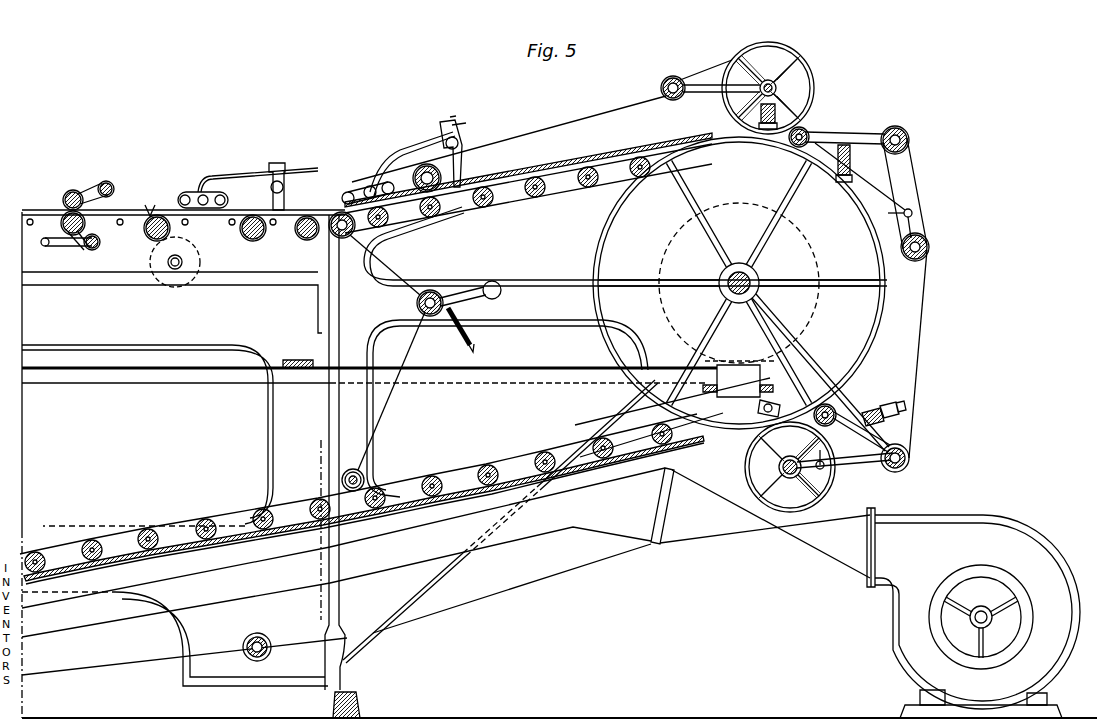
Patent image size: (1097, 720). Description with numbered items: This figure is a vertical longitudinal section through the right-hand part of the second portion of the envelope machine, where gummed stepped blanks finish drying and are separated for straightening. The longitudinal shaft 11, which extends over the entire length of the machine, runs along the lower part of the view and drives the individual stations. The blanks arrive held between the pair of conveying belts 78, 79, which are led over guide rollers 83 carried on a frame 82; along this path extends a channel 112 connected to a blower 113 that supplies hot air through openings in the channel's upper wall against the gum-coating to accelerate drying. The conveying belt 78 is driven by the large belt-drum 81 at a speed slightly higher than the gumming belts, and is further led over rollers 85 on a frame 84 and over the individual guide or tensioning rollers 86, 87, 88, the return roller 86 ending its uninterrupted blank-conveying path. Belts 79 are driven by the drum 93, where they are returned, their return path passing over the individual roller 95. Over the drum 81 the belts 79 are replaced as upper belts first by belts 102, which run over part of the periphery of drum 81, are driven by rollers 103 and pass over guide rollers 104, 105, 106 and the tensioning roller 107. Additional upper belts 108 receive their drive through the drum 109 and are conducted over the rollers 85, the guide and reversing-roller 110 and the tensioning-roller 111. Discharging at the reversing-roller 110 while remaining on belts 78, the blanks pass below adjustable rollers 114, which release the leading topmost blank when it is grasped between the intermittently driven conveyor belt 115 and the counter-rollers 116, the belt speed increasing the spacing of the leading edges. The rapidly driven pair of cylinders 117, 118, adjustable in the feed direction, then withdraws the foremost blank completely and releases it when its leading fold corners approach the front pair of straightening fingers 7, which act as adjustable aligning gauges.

The front pair of straightening fingers 7 is at (80, 238).
The longitudinal shaft 11 is at (460, 372).
The conveying belt 78 is at (402, 207).
The conveying belt 79 is at (295, 652).
The belt-drum 81 is at (872, 250).
The frame 82 is at (458, 476).
The guide rollers 83 is at (540, 456).
The frame 84 is at (510, 208).
The rollers 85 is at (545, 196).
The return roller 86 is at (334, 236).
The guide or tensioning roller 87 is at (418, 304).
The guide or tensioning roller 88 is at (357, 468).
The drum 93 is at (746, 470).
The roller 95 is at (243, 640).
The belts 102 is at (908, 372).
The rollers 103 is at (909, 457).
The guide roller 104 is at (834, 414).
The guide roller 105 is at (805, 130).
The guide roller 106 is at (906, 136).
The tensioning roller 107 is at (923, 253).
The upper belts 108 is at (608, 115).
The drum 109 is at (800, 62).
The guide and reversing-roller 110 is at (418, 168).
The tensioning-roller 111 is at (664, 84).
The channel 112 is at (372, 562).
The blower 113 is at (992, 515).
The rollers 114 is at (348, 190).
The conveyor belt 115 is at (218, 250).
The counter-rollers 116 is at (194, 192).
The cylinder 117 is at (144, 232).
The cylinder 118 is at (73, 192).